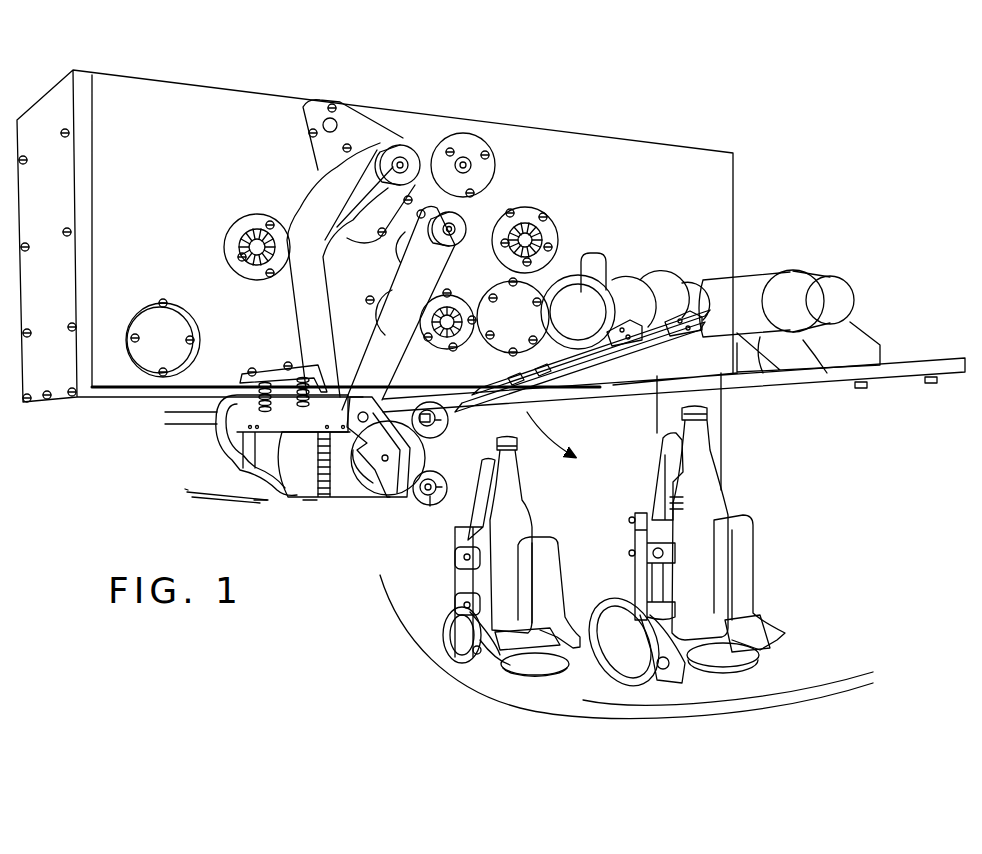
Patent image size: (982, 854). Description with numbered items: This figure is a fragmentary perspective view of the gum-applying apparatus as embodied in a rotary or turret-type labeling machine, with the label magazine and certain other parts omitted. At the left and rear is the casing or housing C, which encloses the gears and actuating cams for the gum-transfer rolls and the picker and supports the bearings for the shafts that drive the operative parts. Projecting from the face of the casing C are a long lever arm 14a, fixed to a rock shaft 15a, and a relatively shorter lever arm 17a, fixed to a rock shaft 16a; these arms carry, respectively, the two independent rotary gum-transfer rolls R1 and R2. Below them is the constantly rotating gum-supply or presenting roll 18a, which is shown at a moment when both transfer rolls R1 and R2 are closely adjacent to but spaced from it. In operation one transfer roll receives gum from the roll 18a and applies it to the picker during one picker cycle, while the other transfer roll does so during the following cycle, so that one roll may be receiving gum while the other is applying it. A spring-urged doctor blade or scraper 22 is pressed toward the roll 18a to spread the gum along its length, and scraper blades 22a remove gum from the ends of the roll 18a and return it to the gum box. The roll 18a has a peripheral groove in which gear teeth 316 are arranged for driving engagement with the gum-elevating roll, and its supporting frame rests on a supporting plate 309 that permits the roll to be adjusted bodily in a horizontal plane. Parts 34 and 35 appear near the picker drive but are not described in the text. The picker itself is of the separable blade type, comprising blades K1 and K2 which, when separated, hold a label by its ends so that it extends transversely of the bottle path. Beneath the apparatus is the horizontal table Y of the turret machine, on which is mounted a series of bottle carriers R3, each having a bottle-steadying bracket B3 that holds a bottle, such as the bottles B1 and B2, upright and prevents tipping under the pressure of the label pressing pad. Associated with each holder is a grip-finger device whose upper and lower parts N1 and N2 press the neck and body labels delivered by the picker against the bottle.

The casing or housing C is at (720, 186).
The long lever arm 14a is at (303, 295).
The rock shaft 15a is at (405, 163).
The rock shaft 16a is at (456, 225).
The shorter lever arm 17a is at (427, 370).
The gum-supply or presenting roll 18a is at (357, 500).
The doctor blade or scraper 22 is at (322, 377).
The scraper blades 22a is at (403, 467).
The clamp block 34 is at (635, 313).
The clamp block 35 is at (690, 307).
The supporting plate 309 is at (222, 500).
The gear teeth 316 is at (330, 497).
The picker blade K1 is at (507, 380).
The picker blade K2 is at (528, 402).
The gum-transfer roll R1 is at (397, 497).
The gum-transfer roll R2 is at (450, 431).
The bottle carrier R3 is at (513, 645).
The bottle B' B1 is at (518, 525).
The bottle B2 is at (712, 507).
The bottle-steadying bracket B3 is at (543, 573).
The upper grip-finger part N1 is at (668, 476).
The lower grip-finger part N2 is at (667, 572).
The horizontal table Y is at (585, 706).